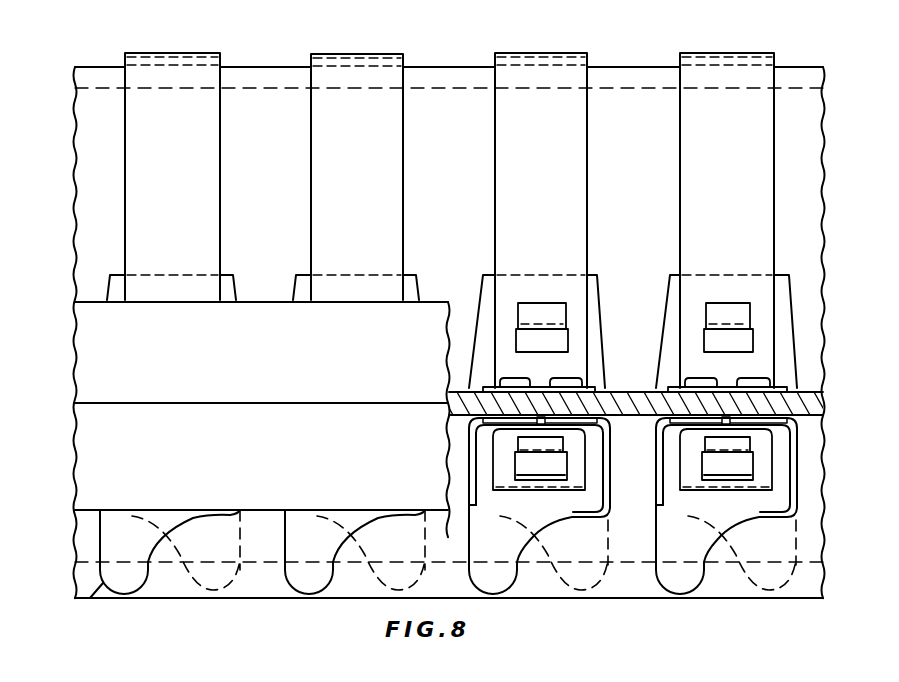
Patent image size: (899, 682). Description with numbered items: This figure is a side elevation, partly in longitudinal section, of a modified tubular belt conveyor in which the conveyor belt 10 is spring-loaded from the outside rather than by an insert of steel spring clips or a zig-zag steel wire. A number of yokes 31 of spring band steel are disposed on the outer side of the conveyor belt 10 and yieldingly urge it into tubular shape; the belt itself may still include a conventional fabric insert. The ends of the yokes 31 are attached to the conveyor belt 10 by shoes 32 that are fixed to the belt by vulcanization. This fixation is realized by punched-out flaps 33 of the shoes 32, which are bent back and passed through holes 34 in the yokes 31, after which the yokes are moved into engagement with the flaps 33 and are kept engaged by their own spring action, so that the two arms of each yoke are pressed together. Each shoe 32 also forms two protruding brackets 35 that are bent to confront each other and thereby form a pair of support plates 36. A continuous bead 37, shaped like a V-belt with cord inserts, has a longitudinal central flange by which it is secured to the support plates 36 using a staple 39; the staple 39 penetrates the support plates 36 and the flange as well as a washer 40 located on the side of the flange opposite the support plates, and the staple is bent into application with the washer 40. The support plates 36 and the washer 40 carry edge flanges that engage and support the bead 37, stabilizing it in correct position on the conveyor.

The conveyor belt 10 is at (637, 75).
The yokes 31 is at (757, 78).
The shoes 32 is at (697, 543).
The punched-out flaps 33 is at (746, 313).
The holes 34 is at (751, 336).
The protruding brackets 35 is at (790, 475).
The support plates 36 is at (803, 438).
The continuous bead 37 is at (89, 355).
The staple 39 is at (693, 436).
The washer 40 is at (790, 386).